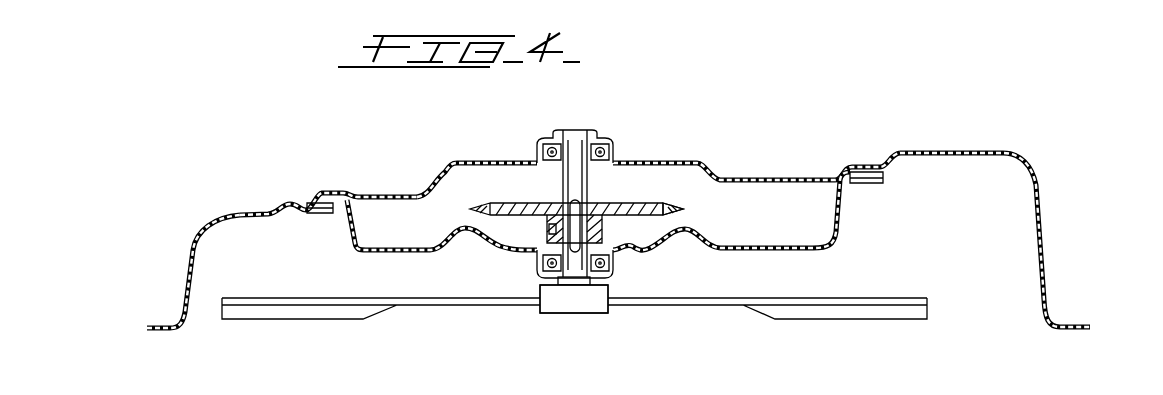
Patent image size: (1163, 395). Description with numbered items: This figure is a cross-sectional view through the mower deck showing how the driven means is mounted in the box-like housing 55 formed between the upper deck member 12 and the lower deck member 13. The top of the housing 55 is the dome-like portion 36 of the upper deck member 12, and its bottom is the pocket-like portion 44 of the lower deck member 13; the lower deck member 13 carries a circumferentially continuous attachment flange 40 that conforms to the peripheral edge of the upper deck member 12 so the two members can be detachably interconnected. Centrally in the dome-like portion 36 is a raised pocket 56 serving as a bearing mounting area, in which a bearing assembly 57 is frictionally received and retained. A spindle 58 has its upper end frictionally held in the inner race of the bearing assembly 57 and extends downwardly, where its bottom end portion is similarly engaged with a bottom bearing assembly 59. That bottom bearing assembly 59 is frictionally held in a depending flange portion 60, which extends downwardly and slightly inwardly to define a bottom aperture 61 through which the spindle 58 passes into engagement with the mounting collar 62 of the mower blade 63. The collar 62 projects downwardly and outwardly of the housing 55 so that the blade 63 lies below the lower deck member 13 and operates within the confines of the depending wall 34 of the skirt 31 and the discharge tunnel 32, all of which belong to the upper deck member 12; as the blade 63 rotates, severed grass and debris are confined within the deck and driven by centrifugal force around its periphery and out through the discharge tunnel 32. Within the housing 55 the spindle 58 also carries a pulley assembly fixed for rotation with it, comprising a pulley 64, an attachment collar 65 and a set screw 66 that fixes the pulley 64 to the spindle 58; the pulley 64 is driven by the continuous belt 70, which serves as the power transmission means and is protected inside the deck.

The upper deck member 12 is at (748, 172).
The lower deck member 13 is at (804, 249).
The skirt 31 is at (247, 212).
The discharge tunnel 32 is at (1020, 156).
The depending wall 34 is at (186, 278).
The dome-like portion 36 is at (495, 160).
The attachment flange 40 is at (323, 213).
The pocket-like portion 44 is at (633, 252).
The box-like housing 55 is at (772, 215).
The raised pocket 56 is at (584, 130).
The bearing assembly 57 is at (612, 140).
The spindle 58 is at (580, 182).
The bottom bearing assembly 59 is at (607, 250).
The depending flange portion 60 is at (613, 275).
The bottom aperture 61 is at (565, 284).
The mounting collar 62 is at (583, 286).
The mower blade 63 is at (890, 306).
The pulley 64 is at (677, 202).
The attachment collar 65 is at (545, 251).
The set screw 66 is at (548, 231).
The continuous belt 70 is at (470, 208).